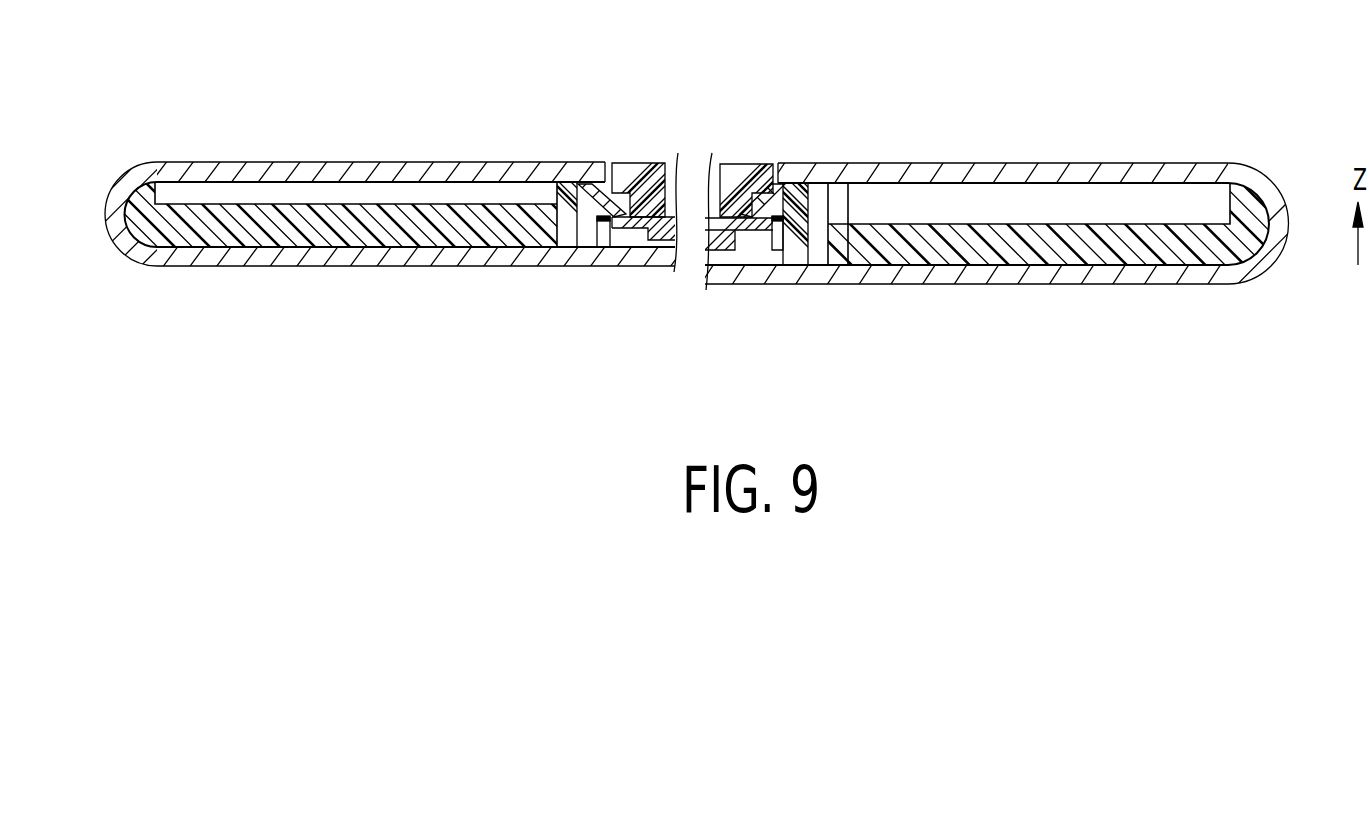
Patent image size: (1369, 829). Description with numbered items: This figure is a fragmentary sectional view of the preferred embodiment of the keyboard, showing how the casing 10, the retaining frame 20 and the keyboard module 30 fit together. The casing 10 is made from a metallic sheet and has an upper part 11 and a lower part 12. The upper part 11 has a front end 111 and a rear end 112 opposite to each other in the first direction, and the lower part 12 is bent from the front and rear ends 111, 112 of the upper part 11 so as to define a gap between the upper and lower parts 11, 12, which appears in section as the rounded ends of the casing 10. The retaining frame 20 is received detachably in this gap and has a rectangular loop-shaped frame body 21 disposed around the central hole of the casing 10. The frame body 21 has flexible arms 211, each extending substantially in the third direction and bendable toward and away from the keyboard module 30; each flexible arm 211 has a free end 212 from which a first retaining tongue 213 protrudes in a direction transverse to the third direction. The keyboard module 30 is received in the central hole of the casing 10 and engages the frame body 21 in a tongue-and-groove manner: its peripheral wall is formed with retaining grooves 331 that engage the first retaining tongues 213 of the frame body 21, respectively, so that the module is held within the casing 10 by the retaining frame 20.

The casing 10 is at (694, 214).
The upper part 11 is at (1050, 172).
The front end 111 is at (1283, 220).
The rear end 112 is at (96, 203).
The lower part 12 is at (1158, 285).
The retaining frame 20 is at (716, 266).
The frame body 21 is at (1042, 250).
The flexible arm 211 is at (585, 247).
The free end 212 is at (583, 192).
The first retaining tongue 213 is at (588, 186).
The keyboard module 30 is at (693, 202).
The retaining groove 331 is at (652, 183).